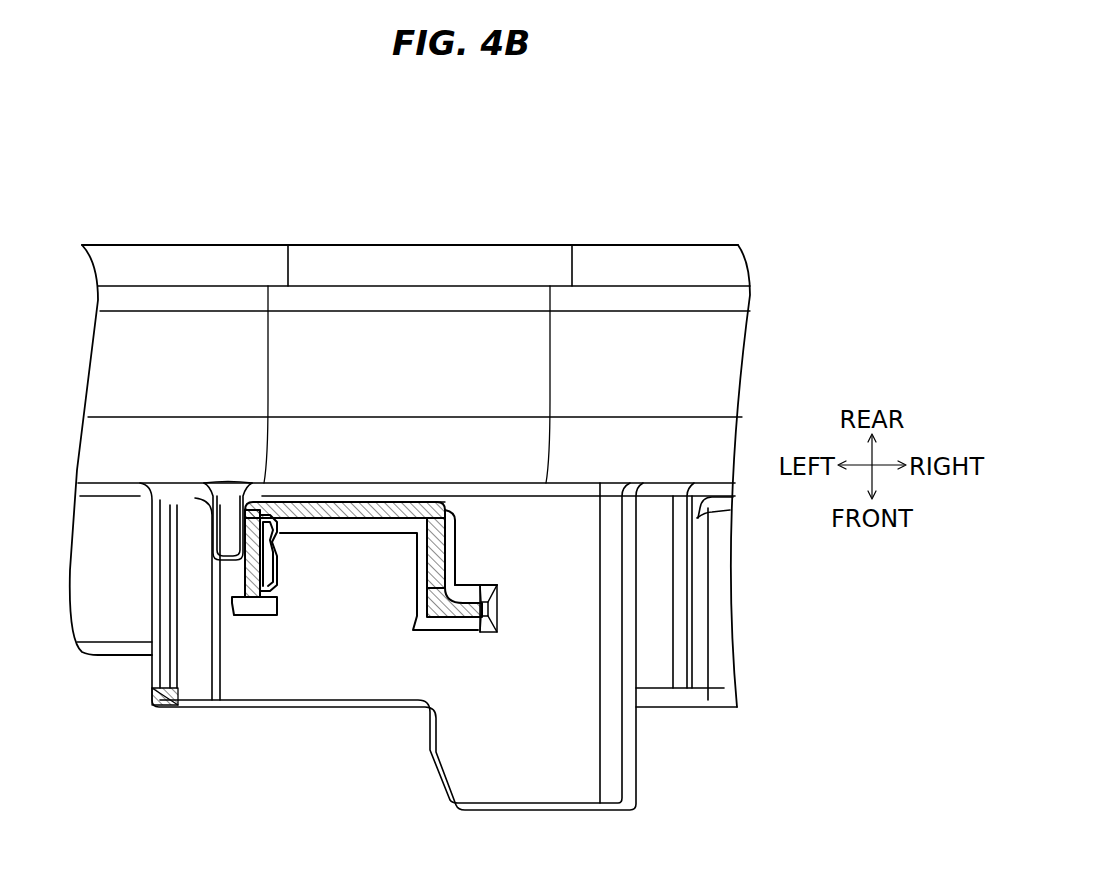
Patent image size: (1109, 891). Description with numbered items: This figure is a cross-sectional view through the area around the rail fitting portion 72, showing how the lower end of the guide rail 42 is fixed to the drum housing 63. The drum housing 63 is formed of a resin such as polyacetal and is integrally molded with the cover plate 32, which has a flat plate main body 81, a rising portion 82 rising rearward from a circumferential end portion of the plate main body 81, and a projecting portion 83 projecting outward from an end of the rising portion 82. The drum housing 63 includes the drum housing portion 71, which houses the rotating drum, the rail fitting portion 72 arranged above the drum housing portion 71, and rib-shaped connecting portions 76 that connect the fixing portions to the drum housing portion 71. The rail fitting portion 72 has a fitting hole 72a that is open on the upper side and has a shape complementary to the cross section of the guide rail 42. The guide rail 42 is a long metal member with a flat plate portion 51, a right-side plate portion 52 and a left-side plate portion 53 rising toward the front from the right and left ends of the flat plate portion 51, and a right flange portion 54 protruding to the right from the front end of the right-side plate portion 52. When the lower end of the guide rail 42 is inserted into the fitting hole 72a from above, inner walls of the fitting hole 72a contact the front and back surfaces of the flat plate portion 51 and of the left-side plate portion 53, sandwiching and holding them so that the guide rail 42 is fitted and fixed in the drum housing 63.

The cover plate 32 is at (674, 242).
The rising portion 82 is at (235, 350).
The projecting portion 83 is at (332, 263).
The plate main body 81 is at (530, 487).
The connecting portion 76 is at (112, 657).
The rail fitting portion 72 is at (286, 710).
The fitting hole 72a is at (362, 508).
The drum housing 63 is at (179, 712).
The drum housing portion 71 is at (661, 712).
The flat plate portion 51 is at (340, 520).
The right-side plate portion 52 is at (448, 553).
The left-side plate portion 53 is at (243, 565).
The right flange portion 54 is at (465, 618).
The guide rail 42 is at (478, 618).